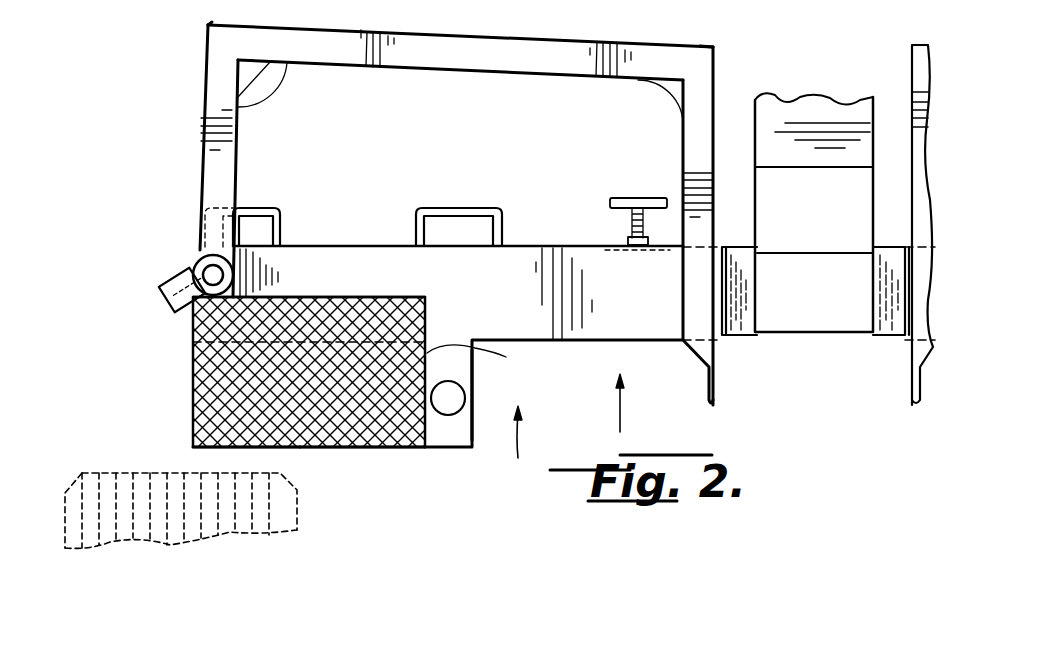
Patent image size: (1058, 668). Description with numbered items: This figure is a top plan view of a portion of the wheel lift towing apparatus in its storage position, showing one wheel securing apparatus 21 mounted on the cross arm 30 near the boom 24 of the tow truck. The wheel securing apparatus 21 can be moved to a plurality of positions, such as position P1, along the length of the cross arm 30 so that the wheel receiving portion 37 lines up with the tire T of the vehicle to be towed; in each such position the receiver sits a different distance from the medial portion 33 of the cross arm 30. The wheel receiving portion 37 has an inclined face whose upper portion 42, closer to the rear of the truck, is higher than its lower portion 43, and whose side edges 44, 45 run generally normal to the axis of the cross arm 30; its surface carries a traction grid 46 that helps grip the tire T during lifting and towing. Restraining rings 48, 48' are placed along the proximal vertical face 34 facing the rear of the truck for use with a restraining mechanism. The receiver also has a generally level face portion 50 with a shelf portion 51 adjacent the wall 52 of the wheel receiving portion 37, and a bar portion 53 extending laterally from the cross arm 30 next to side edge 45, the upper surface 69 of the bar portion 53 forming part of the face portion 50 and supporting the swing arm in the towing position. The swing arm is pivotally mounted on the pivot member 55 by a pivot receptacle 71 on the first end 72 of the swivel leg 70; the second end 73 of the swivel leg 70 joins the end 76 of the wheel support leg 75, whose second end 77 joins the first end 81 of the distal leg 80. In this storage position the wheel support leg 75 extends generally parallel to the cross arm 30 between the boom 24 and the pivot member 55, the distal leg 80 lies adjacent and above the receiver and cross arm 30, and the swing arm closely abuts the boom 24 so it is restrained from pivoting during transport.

The wheel securing apparatus 21 is at (518, 446).
The boom 24 is at (836, 215).
The cross arm 30 is at (748, 327).
The medial portion 33 is at (818, 343).
The proximal vertical face 34 is at (350, 246).
The wheel receiving portion 37 is at (141, 432).
The upper portion 42 is at (230, 328).
The lower portion 43 is at (393, 445).
The side edge 44 is at (193, 395).
The side edge 45 is at (453, 487).
The traction grid 46 is at (370, 445).
The restraining ring 48 is at (266, 199).
The restraining ring 48' is at (476, 199).
The face portion 50 is at (518, 262).
The shelf portion 51 is at (310, 262).
The wall 52 is at (377, 297).
The bar portion 53 is at (463, 433).
The pivot member 55 is at (192, 262).
The upper surface 69 is at (455, 377).
The swivel leg 70 is at (212, 103).
The pivot receptacle 71 is at (205, 280).
The first end 72 is at (197, 243).
The second end 73 is at (207, 62).
The wheel support leg 75 is at (457, 55).
The end 76 is at (212, 20).
The second end 77 is at (688, 43).
The distal leg 80 is at (703, 117).
The first end 81 is at (718, 60).
The tire T is at (237, 515).
The position P1 is at (634, 410).